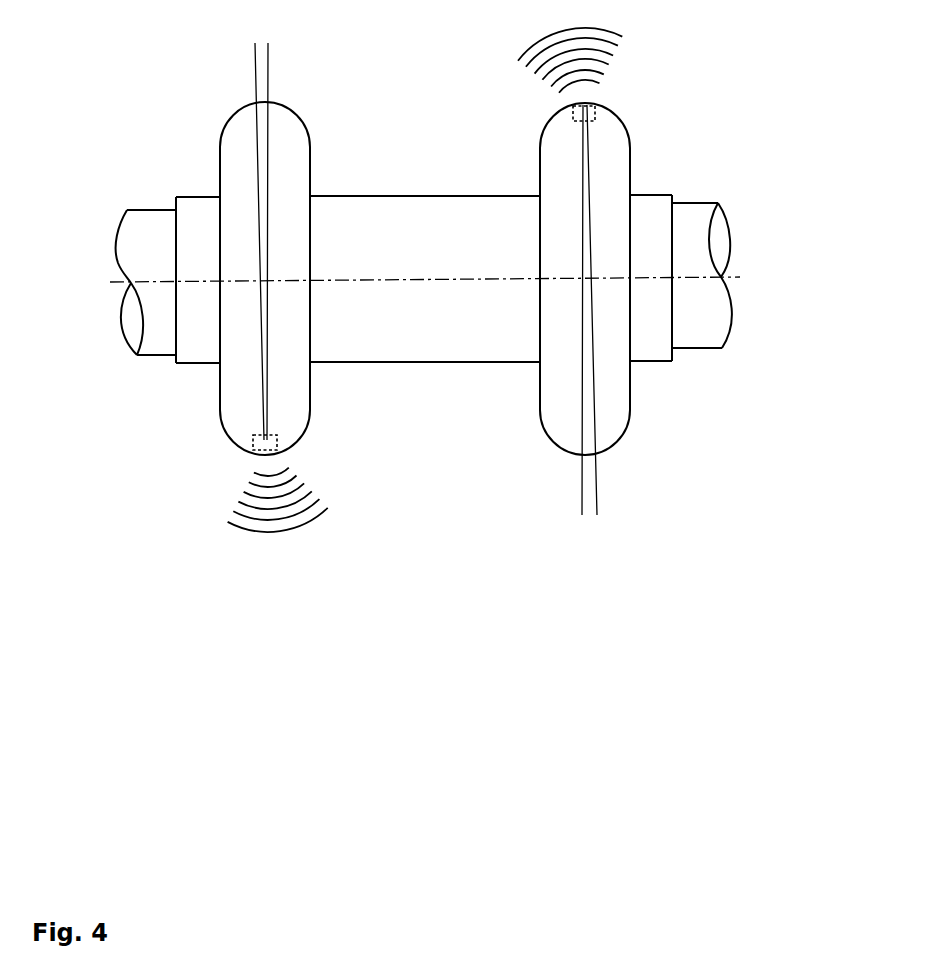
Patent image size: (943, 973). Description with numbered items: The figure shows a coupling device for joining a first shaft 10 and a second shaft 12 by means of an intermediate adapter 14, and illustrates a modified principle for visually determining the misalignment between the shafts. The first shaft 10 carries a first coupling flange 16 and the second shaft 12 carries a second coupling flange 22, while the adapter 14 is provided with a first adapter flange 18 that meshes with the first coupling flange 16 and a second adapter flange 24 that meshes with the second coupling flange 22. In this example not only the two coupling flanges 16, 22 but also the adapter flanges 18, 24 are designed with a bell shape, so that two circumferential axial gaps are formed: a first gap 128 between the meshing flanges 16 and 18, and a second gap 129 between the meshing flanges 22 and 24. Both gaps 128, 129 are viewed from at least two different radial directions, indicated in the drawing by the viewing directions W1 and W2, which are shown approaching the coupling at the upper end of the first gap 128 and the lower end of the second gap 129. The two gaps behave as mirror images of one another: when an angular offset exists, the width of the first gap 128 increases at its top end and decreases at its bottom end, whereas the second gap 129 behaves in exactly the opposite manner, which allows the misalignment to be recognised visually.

The first shaft 10 is at (132, 230).
The second shaft 12 is at (697, 231).
The adapter 14 is at (402, 212).
The first coupling flange 16 is at (240, 158).
The first adapter flange 18 is at (292, 143).
The second coupling flange 22 is at (618, 143).
The second adapter flange 24 is at (556, 143).
The first gap 128 is at (267, 118).
The second gap 129 is at (622, 405).
The first welding beam W1 is at (278, 271).
The second welding beam W2 is at (570, 292).